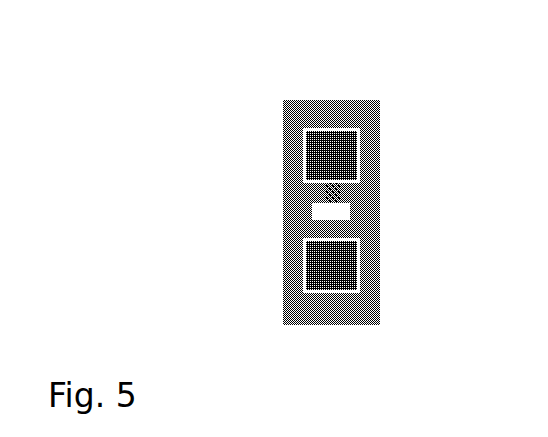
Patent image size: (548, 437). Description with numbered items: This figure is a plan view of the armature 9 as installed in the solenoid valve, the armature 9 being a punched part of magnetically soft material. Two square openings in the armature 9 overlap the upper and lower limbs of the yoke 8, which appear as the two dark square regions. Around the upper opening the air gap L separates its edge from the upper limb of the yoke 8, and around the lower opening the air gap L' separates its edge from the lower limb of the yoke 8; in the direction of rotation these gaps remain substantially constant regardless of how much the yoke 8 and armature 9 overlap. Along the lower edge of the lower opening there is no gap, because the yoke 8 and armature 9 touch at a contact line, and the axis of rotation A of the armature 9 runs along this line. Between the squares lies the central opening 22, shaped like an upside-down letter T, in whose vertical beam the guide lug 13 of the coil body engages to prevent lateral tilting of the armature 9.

The armature 9 is at (336, 108).
The yoke 8 is at (352, 152).
The guide lug 13 is at (325, 188).
The T-shaped opening 22 is at (350, 207).
The air gap L is at (251, 156).
The air gap L' is at (251, 280).
The axis of rotation A is at (333, 292).